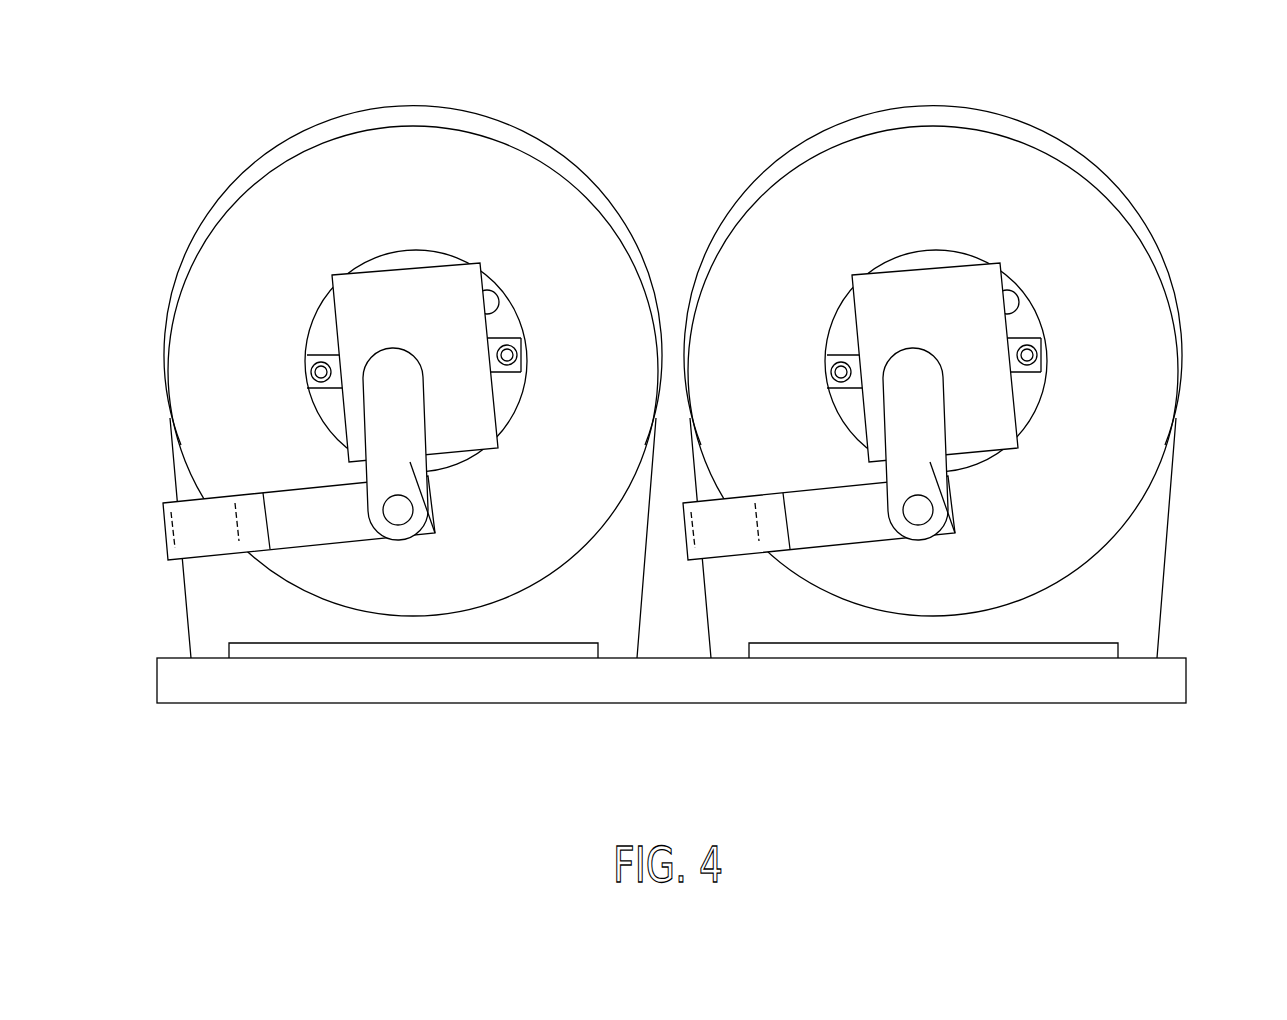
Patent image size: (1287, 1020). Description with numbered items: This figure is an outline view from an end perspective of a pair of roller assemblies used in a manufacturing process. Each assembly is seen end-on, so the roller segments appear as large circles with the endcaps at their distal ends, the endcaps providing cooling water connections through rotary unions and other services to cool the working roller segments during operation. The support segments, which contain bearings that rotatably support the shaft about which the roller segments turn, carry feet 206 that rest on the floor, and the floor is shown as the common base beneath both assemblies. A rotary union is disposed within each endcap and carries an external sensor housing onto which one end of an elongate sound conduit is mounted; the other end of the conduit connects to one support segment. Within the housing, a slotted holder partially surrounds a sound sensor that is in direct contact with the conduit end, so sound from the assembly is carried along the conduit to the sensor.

The feet 206 is at (1130, 660).